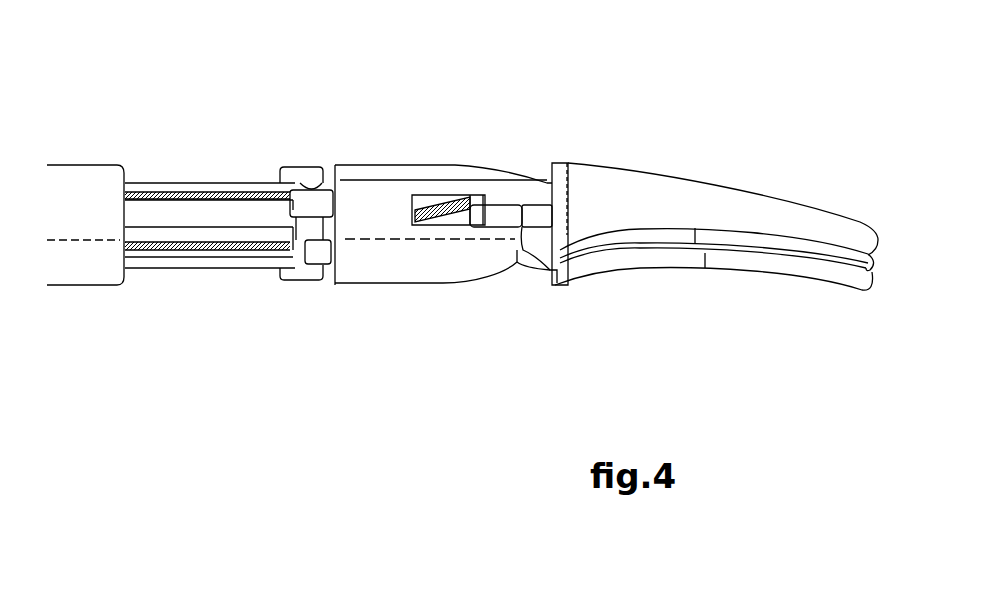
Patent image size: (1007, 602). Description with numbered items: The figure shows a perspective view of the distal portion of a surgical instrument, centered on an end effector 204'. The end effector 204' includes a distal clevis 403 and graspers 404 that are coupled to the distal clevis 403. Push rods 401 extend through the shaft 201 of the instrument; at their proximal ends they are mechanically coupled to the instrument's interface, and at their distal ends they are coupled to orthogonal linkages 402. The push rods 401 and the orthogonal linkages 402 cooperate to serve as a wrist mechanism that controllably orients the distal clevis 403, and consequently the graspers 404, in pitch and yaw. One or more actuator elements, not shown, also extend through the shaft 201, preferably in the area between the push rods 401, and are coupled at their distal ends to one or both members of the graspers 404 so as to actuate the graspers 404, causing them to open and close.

The shaft 201 is at (100, 283).
The push rods 401 is at (198, 221).
The orthogonal linkages 402 is at (304, 153).
The distal clevis 403 is at (445, 283).
The end effector 204' is at (617, 168).
The graspers 404 is at (815, 281).